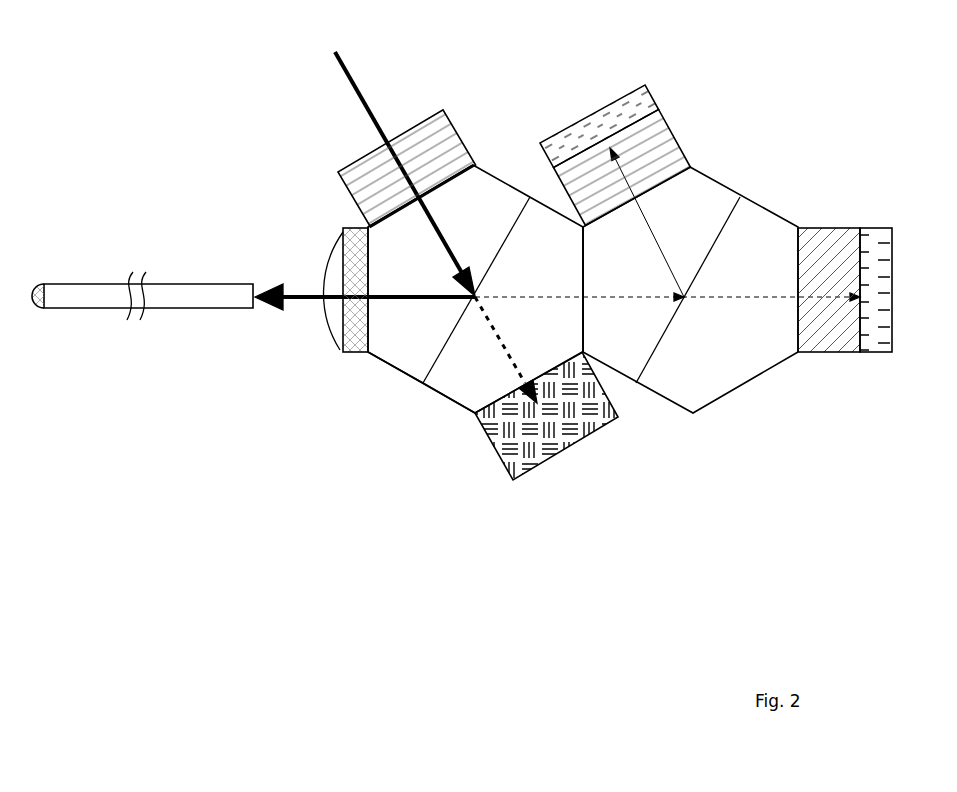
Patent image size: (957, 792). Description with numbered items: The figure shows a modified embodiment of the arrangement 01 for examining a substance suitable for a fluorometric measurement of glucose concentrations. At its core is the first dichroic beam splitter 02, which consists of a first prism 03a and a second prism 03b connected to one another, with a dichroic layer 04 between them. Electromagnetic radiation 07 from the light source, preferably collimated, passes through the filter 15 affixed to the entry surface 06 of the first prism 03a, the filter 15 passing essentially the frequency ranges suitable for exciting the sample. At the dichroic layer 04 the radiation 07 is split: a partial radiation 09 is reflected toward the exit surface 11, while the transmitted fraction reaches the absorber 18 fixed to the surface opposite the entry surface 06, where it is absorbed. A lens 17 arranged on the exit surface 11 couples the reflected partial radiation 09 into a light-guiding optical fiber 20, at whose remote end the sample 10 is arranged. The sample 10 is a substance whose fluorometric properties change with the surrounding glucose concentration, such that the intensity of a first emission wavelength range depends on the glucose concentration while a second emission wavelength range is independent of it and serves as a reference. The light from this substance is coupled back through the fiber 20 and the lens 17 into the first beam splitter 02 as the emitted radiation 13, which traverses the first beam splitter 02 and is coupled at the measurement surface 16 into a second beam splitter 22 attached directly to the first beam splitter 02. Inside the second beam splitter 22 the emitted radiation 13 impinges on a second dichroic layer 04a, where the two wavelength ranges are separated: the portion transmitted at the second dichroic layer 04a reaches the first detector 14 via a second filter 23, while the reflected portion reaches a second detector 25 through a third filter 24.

The arrangement 01 is at (288, 535).
The dichroic beam splitter 02 is at (478, 163).
The first prism 03a is at (398, 360).
The second prism 03b is at (463, 392).
The dichroic layer 04 is at (513, 220).
The second dichroic layer 04a is at (733, 203).
The entry surface 06 is at (362, 217).
The electromagnetic radiation 07 is at (335, 52).
The partial radiation 09 is at (293, 277).
The sample 10 is at (38, 308).
The exit surface 11 is at (352, 353).
The emitted radiation 13 is at (287, 300).
The first detector 14 is at (877, 248).
The filter 15 is at (362, 167).
The measurement surface 16 is at (587, 330).
The lens 17 is at (350, 308).
The absorber 18 is at (522, 450).
The light-guiding optical fiber 20 is at (175, 308).
The second beam splitter 22 is at (762, 203).
The second filter 23 is at (830, 228).
The third filter 24 is at (668, 123).
The second detector 25 is at (595, 110).